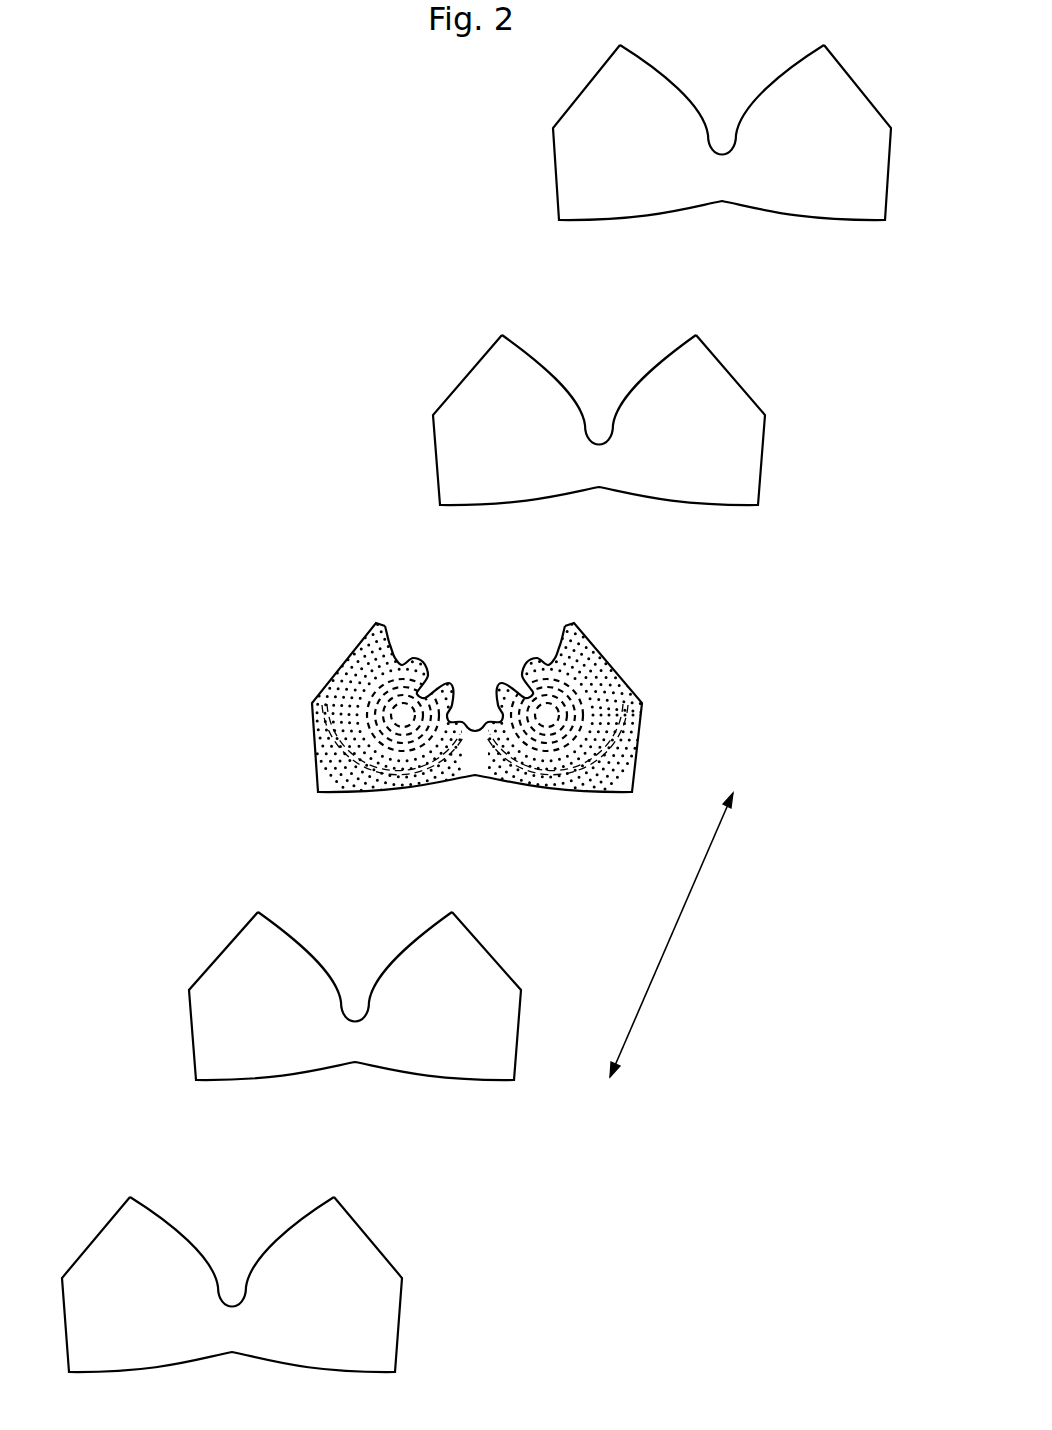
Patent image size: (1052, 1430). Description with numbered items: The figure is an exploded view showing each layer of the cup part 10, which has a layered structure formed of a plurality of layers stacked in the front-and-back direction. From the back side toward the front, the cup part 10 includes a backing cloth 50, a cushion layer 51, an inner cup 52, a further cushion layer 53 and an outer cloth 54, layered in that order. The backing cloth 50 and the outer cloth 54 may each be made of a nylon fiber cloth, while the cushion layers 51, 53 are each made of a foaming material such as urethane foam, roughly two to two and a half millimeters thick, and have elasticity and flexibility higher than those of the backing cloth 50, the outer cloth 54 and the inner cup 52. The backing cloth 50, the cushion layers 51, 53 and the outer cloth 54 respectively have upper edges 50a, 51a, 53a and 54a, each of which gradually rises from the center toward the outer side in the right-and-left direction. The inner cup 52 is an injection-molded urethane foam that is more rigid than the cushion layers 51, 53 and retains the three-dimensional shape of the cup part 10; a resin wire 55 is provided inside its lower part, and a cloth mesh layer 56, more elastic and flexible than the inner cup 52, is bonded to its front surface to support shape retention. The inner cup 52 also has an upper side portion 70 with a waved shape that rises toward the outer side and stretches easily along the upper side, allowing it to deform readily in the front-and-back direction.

The cup part 10 is at (253, 367).
The backing cloth 50 is at (673, 126).
The upper edge 50a is at (750, 100).
The cushion layer 51 is at (572, 400).
The upper edge 51a is at (637, 378).
The inner cup 52 is at (465, 725).
The upper side portion 70 is at (505, 683).
The mesh layer 56 is at (598, 672).
The resin wire 55 is at (300, 762).
The cushion layer 53 is at (320, 978).
The upper edge 53a is at (387, 963).
The outer cloth 54 is at (223, 1259).
The upper edge 54a is at (270, 1242).